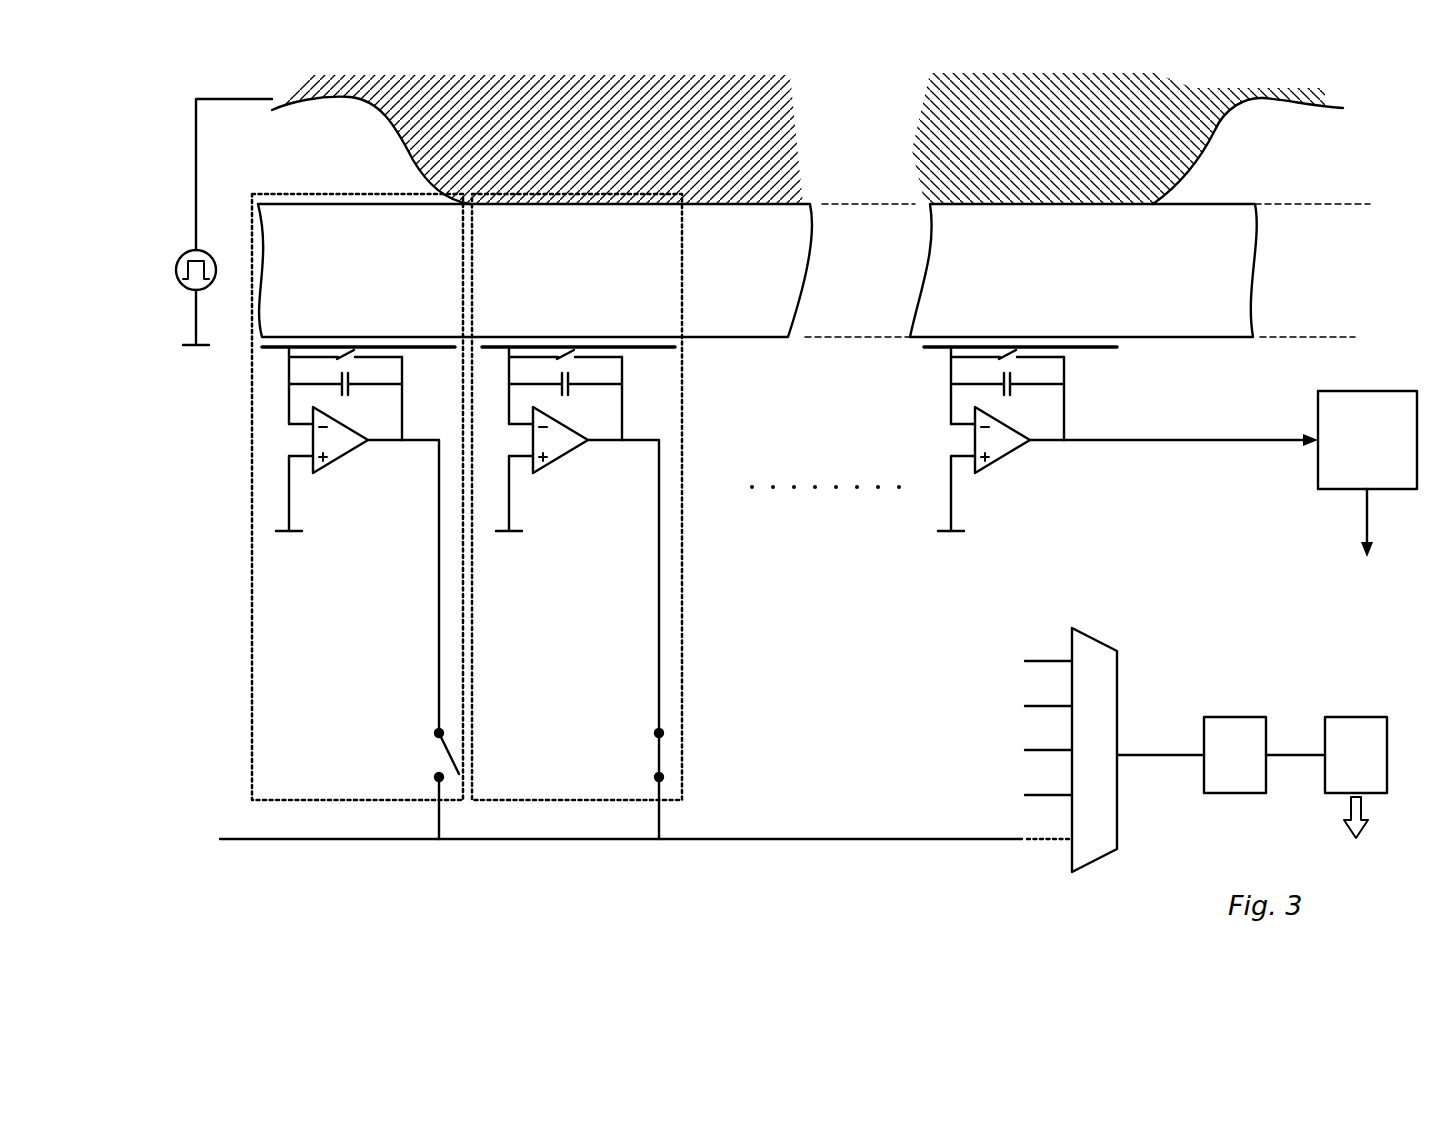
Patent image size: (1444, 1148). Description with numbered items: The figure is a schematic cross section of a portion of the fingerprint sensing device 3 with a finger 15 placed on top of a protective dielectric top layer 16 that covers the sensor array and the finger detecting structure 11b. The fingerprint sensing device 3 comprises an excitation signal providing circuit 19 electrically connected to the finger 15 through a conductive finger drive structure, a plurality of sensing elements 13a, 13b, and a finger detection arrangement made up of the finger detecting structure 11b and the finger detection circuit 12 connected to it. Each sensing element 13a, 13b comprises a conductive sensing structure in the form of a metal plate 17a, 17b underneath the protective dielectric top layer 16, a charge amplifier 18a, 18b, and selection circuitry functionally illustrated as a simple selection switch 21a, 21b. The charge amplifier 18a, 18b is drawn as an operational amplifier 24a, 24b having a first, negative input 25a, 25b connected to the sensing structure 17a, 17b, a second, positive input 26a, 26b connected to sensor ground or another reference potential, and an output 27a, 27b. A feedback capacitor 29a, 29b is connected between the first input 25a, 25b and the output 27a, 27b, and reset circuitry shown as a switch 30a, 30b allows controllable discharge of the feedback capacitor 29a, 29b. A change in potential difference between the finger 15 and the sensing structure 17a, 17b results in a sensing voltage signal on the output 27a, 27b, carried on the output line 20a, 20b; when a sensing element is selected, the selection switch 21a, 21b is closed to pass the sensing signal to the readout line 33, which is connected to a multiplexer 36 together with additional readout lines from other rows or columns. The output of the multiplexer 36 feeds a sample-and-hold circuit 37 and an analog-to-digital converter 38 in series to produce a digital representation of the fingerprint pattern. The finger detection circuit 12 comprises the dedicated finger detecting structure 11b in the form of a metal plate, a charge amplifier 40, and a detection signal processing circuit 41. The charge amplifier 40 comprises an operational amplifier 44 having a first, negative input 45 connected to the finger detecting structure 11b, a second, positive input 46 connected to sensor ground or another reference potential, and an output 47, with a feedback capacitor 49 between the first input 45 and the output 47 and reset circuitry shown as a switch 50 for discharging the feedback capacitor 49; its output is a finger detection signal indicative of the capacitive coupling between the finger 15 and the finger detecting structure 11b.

The fingerprint sensing device 3 is at (198, 677).
The finger detecting structure 11b is at (1088, 348).
The finger detection circuit 12 is at (1193, 525).
The sensing element 13a is at (327, 801).
The sensing element 13b is at (620, 801).
The finger 15 is at (650, 137).
The protective dielectric top layer 16 is at (597, 262).
The sensing structure 17a is at (431, 347).
The sensing structure 17b is at (652, 345).
The charge amplifier 18a is at (328, 497).
The charge amplifier 18b is at (560, 491).
The excitation signal providing circuit 19 is at (184, 286).
The amplifier output line 20a is at (414, 467).
The amplifier output line 20b is at (622, 477).
The selection switch 21a is at (413, 743).
The selection switch 21b is at (639, 743).
The operational amplifier 24a is at (355, 426).
The operational amplifier 24b is at (560, 420).
The first input 25a is at (313, 428).
The first input 25b is at (533, 428).
The second input 26a is at (300, 457).
The second input 26b is at (525, 457).
The output 27a is at (367, 442).
The output 27b is at (590, 443).
The feedback capacitor 29a is at (371, 365).
The feedback capacitor 29b is at (591, 365).
The reset circuitry 30a is at (347, 354).
The reset circuitry 30b is at (568, 355).
The readout line 33 is at (537, 841).
The multiplexer 36 is at (1097, 642).
The sample-and-hold circuit 37 is at (1231, 717).
The analog-to-digital converter 38 is at (1355, 717).
The charge amplifier 40 is at (1022, 476).
The detection signal processing circuit 41 is at (1371, 392).
The operational amplifier 44 is at (1008, 420).
The first input 45 is at (975, 428).
The second input 46 is at (975, 458).
The output 47 is at (1072, 462).
The feedback capacitor 49 is at (1027, 350).
The reset circuitry 50 is at (1000, 349).